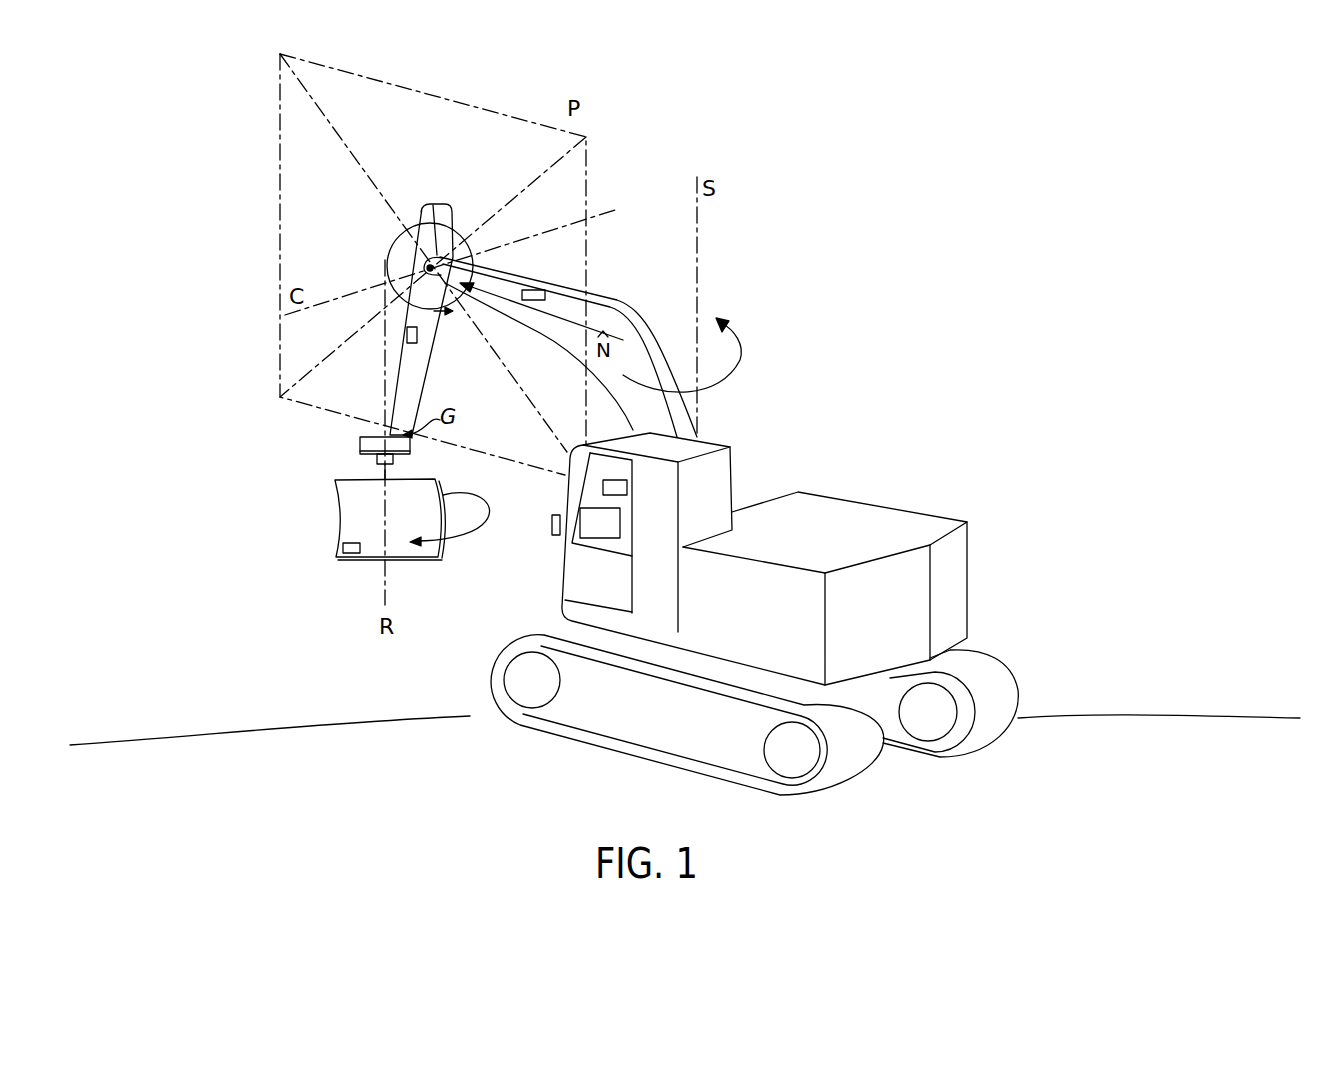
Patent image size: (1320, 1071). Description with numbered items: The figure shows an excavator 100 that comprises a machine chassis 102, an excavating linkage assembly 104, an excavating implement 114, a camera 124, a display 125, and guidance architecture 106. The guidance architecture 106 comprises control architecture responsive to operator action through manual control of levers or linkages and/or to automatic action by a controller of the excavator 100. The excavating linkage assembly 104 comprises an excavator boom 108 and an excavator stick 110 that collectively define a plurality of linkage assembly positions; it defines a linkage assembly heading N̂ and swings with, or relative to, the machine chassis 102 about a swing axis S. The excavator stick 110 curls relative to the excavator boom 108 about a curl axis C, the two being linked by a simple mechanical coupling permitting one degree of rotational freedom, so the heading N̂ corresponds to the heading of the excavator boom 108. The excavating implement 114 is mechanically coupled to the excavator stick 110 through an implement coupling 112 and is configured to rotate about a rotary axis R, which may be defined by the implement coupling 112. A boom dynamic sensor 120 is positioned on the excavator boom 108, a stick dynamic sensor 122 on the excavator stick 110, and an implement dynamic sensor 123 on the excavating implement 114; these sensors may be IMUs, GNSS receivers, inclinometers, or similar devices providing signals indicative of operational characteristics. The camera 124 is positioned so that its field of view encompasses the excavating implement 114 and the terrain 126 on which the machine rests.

The excavator 100 is at (978, 440).
The machine chassis 102 is at (882, 507).
The excavating linkage assembly 104 is at (760, 300).
The guidance architecture 106 is at (603, 538).
The excavator boom 108 is at (617, 298).
The excavator stick 110 is at (420, 410).
The implement coupling 112 is at (372, 462).
The excavating implement 114 is at (440, 552).
The boom dynamic sensor 120 is at (536, 290).
The stick dynamic sensor 122 is at (417, 335).
The implement dynamic sensor 123 is at (342, 548).
The camera 124 is at (557, 537).
The display 125 is at (627, 487).
The terrain 126 is at (1143, 773).